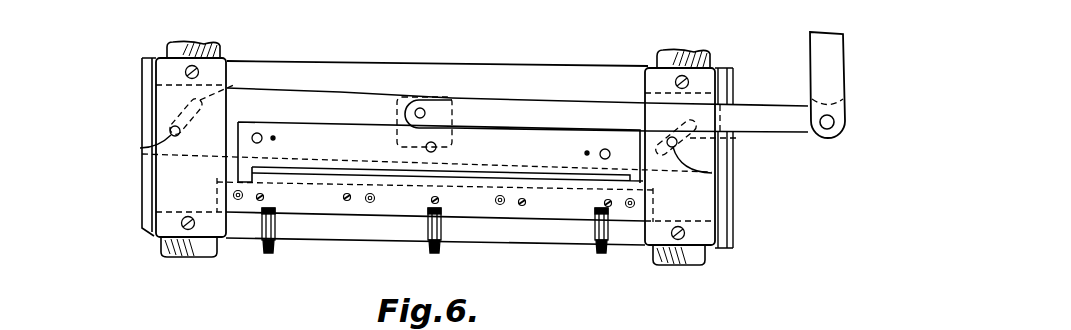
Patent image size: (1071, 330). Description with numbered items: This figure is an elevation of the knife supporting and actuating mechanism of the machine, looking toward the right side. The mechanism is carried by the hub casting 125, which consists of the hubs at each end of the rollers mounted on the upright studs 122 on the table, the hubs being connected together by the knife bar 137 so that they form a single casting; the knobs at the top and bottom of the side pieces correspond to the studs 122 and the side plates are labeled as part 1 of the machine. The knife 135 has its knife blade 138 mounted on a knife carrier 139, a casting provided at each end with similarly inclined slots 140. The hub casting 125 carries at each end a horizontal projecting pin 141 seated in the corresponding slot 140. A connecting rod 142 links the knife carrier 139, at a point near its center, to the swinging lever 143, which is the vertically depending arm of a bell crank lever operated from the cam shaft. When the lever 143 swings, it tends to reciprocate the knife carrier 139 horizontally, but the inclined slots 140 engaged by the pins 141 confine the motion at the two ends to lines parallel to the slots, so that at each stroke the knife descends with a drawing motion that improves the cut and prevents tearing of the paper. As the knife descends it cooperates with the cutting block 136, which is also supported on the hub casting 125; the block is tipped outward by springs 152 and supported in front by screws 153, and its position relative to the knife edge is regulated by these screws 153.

The frame bracket 1 is at (152, 232).
The upright stud 122 is at (205, 40).
The hub casting 125 is at (145, 58).
The knife 135 is at (347, 113).
The cutting block 136 is at (547, 203).
The knife bar 137 is at (513, 83).
The knife blade 138 is at (459, 129).
The knife carrier 139 is at (427, 132).
The inclined slot 140 is at (752, 150).
The pin 141 is at (745, 180).
The connecting rod 142 is at (606, 115).
The swinging lever 143 is at (832, 72).
The spring 152 is at (238, 200).
The screw 153 is at (277, 228).